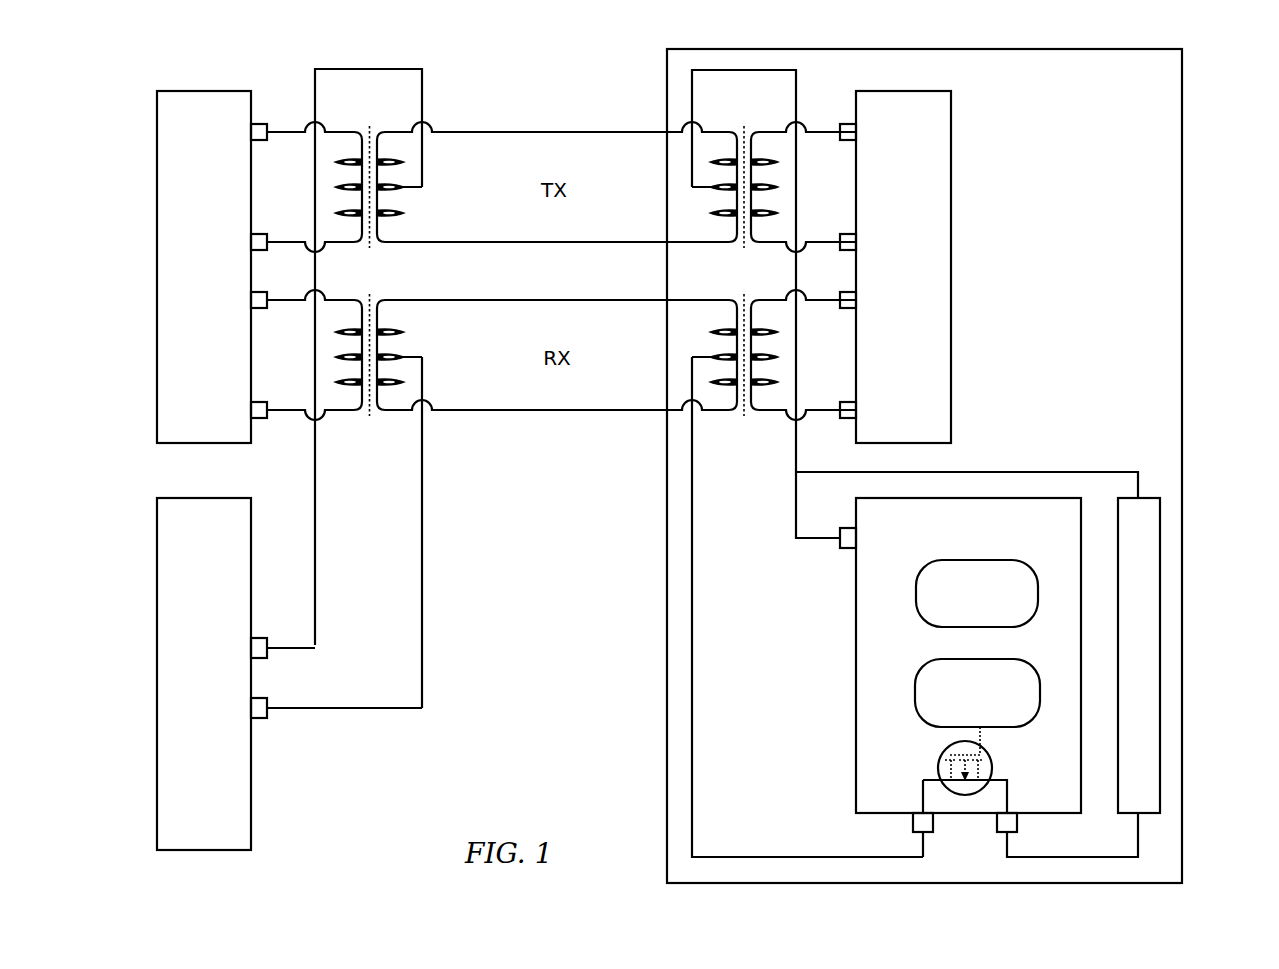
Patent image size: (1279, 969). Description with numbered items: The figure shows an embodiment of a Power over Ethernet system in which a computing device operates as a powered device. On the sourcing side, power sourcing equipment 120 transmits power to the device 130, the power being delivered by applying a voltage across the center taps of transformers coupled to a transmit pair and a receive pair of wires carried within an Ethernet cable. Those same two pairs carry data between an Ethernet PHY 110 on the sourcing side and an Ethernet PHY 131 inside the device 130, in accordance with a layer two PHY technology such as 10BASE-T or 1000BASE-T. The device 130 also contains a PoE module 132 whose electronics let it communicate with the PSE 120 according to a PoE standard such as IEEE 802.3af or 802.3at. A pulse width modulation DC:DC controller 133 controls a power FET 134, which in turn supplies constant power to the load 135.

The Ethernet PHY 110 is at (157, 268).
The power sourcing equipment 120 is at (157, 675).
The device 130 is at (1182, 272).
The Ethernet PHY 131 is at (951, 265).
The PoE module 132 is at (949, 561).
The pulse width modulation DC:DC controller 133 is at (931, 661).
The power FET 134 is at (939, 772).
The load 135 is at (1160, 652).